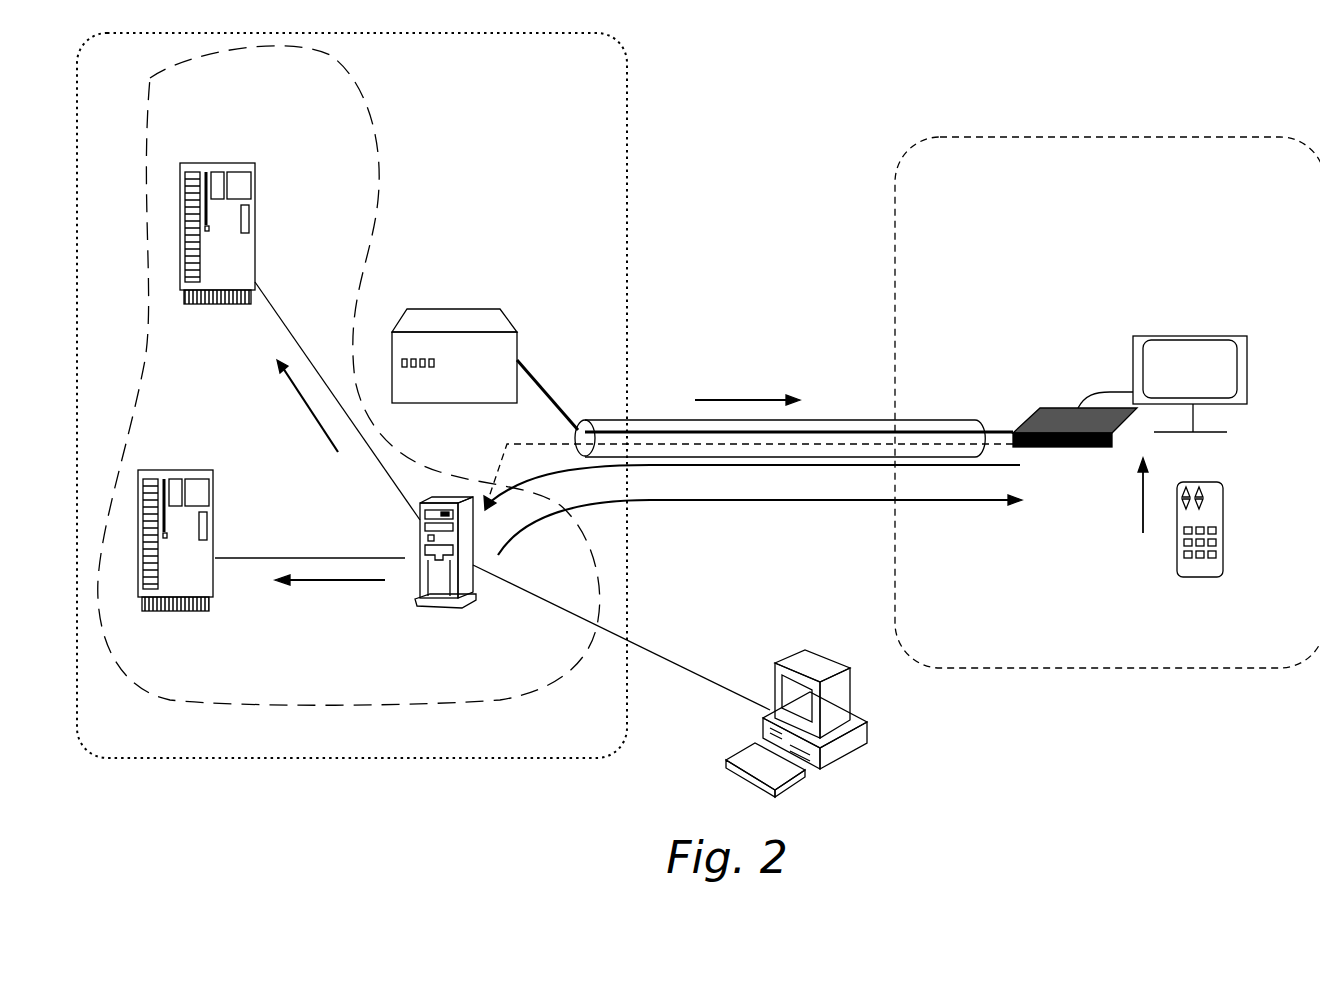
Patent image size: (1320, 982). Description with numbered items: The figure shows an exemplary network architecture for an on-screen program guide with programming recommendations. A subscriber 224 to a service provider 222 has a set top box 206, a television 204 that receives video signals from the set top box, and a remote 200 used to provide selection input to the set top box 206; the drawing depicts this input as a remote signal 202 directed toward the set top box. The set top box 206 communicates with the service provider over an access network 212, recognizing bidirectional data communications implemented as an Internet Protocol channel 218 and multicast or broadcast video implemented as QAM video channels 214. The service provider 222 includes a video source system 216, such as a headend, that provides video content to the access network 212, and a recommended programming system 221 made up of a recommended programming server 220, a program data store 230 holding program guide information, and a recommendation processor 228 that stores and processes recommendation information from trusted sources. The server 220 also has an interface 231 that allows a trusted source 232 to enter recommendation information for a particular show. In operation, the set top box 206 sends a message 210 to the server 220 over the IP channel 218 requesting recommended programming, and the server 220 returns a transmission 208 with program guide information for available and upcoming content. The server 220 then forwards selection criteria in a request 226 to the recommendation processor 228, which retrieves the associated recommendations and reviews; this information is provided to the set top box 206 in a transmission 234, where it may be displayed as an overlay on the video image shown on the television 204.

The remote controller 200 is at (1224, 525).
The remote control signal 202 is at (1143, 502).
The television 204 is at (1252, 362).
The set top box 206 is at (1053, 408).
The transmission 208 is at (822, 505).
The message 210 is at (712, 466).
The access network 212 is at (860, 418).
The QAM video channels 214 is at (565, 405).
The video source system 216 is at (517, 345).
The Internet Protocol channel 218 is at (495, 460).
The recommended programming server 220 is at (412, 605).
The recommended programming system 221 is at (370, 170).
The service provider 222 is at (627, 205).
The subscriber 224 is at (903, 168).
The request 226 is at (303, 408).
The recommendation processor 228 is at (258, 232).
The program data store 230 is at (213, 503).
The interface 231 is at (680, 665).
The trusted source 232 is at (866, 731).
The transmission 234 is at (758, 402).